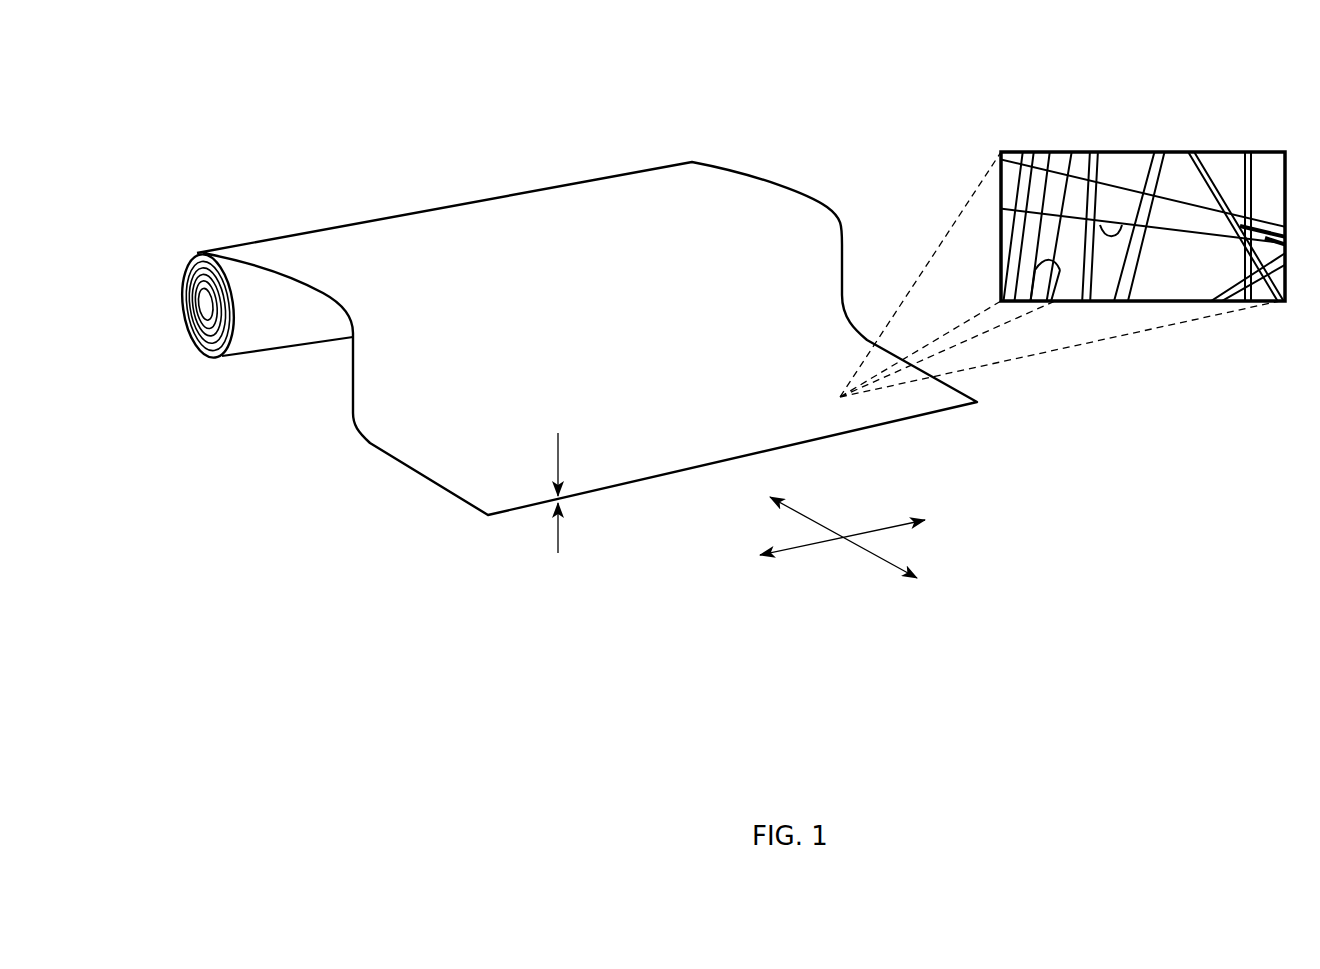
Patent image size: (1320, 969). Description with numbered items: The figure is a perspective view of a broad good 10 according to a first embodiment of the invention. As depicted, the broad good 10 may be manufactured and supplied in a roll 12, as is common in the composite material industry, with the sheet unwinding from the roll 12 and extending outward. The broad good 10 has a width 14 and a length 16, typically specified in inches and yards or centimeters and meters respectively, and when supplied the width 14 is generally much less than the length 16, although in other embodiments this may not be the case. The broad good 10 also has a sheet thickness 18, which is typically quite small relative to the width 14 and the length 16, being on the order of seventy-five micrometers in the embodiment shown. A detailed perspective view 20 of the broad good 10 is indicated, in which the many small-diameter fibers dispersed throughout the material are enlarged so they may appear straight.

The broad good 10 is at (836, 106).
The roll 12 is at (196, 250).
The width 14 is at (783, 548).
The length 16 is at (805, 512).
The sheet thickness 18 is at (560, 513).
The detailed perspective view 20 is at (1158, 152).